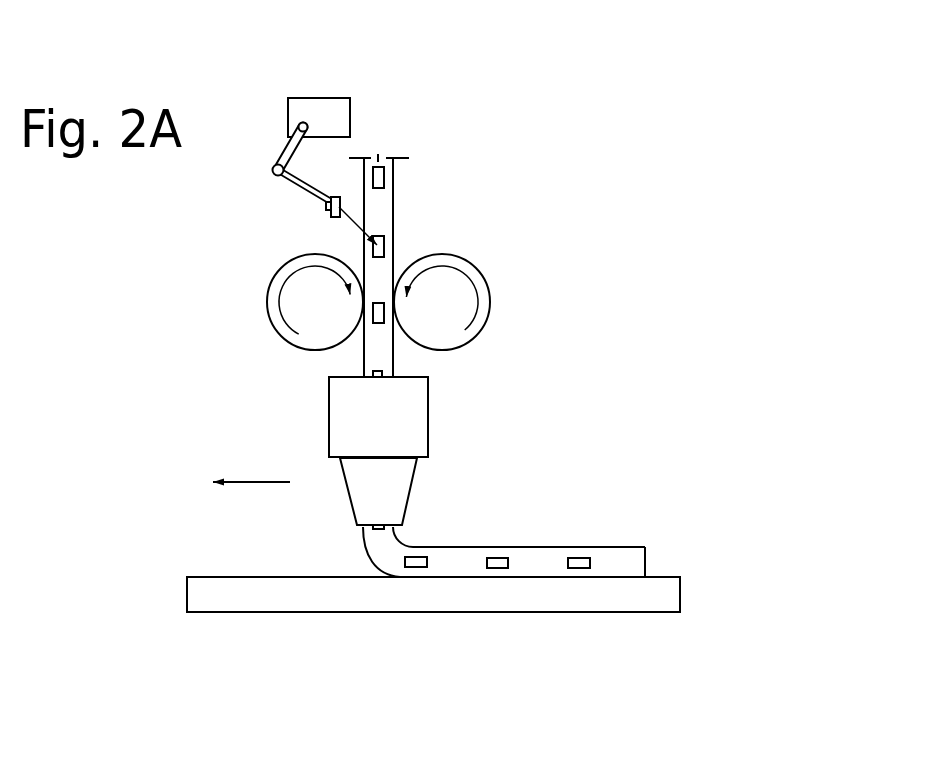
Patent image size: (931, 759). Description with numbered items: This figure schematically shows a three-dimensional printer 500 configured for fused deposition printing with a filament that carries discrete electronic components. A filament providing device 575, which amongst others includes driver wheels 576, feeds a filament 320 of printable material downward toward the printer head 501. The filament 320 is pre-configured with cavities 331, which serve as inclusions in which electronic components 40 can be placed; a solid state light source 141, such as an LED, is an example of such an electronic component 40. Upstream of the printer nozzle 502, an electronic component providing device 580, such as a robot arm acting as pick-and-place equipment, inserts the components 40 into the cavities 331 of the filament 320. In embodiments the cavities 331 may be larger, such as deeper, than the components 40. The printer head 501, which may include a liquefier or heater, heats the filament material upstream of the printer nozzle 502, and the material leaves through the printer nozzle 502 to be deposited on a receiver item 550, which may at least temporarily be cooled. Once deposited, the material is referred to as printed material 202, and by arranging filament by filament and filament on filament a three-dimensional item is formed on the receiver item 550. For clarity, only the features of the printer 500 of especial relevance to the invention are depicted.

The electronic component providing device 580 is at (318, 90).
The electronic component 40 is at (280, 184).
The solid state light source 141 is at (293, 183).
The filament 320 is at (489, 325).
The cavities 331 is at (378, 180).
The filament providing device 575 is at (453, 145).
The driver wheels 576 is at (258, 302).
The 3D printer 500 is at (450, 325).
The printer head 501 is at (387, 408).
The printer nozzle 502 is at (362, 528).
The 3D printed material 202 is at (632, 560).
The receiver item 550 is at (173, 597).